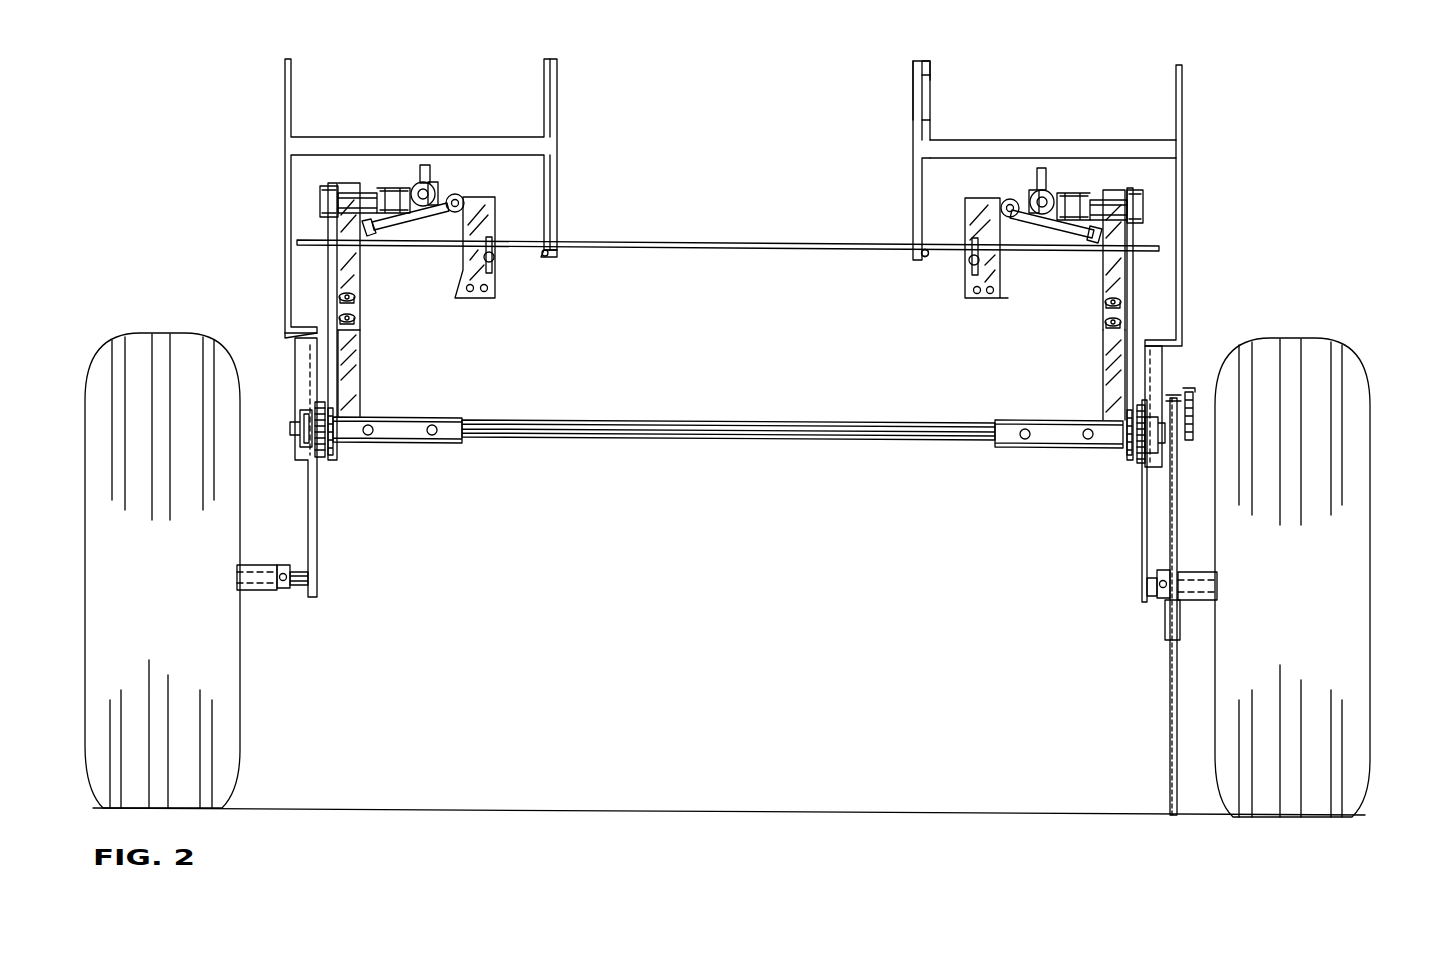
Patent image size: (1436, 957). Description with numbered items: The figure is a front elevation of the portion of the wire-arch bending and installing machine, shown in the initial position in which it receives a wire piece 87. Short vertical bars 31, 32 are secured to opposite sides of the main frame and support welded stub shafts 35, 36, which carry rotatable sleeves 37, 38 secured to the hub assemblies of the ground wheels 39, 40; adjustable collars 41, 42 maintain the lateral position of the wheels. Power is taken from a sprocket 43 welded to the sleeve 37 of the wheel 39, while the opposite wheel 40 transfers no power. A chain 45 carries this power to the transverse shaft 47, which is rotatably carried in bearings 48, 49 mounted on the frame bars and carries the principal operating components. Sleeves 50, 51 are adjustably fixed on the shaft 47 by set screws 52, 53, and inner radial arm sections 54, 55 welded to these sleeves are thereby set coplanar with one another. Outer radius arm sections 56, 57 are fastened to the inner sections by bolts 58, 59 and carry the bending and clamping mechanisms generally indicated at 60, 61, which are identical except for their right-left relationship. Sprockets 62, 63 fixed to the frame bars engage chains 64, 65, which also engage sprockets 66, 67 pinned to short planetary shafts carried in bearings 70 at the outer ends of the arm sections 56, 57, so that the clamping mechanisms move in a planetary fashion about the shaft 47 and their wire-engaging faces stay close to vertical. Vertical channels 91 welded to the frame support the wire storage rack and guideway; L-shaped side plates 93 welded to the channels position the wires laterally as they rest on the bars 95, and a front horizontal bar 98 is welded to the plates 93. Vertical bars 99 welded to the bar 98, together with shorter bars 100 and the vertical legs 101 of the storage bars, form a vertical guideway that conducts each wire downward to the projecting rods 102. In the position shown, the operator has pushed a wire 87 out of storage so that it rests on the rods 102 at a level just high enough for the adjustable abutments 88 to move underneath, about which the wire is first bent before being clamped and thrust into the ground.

The short vertical bar 31 is at (1142, 553).
The short vertical bar 32 is at (314, 535).
The stub shaft 35 is at (1150, 598).
The stub shaft 36 is at (298, 588).
The rotatable sleeve 37 is at (1200, 602).
The rotatable sleeve 38 is at (262, 592).
The wheel 39 is at (1370, 764).
The wheel 40 is at (241, 752).
The adjustable collar 41 is at (1157, 572).
The adjustable collar 42 is at (283, 565).
The sprocket 43 is at (1170, 640).
The chain 45 is at (1168, 510).
The transverse shaft 47 is at (781, 441).
The bearing 48 is at (1150, 455).
The bearing 49 is at (302, 413).
The sleeve 50 is at (1029, 420).
The sleeve 51 is at (416, 417).
The set screw 52 is at (1022, 430).
The set screw 53 is at (436, 428).
The inner radial arm section 54 is at (1103, 360).
The inner radial arm section 55 is at (352, 368).
The outer radius arm section 56 is at (1103, 267).
The outer radius arm section 57 is at (359, 270).
The bolts 58 is at (1104, 323).
The bolts 59 is at (357, 320).
The bending and clamping mechanism 60 is at (1003, 204).
The bending and clamping mechanism 61 is at (461, 190).
The sprocket 62 is at (1125, 435).
The sprocket 63 is at (335, 405).
The chain 64 is at (1134, 282).
The chain 65 is at (329, 268).
The sprocket 66 is at (1134, 188).
The sprocket 67 is at (334, 184).
The bearings 70 is at (358, 193).
The wire work piece 87 is at (692, 241).
The adjustable abutment 88 is at (974, 263).
The vertical channel 91 is at (1160, 363).
The L-shaped side plate 93 is at (1182, 92).
The bars 95 is at (930, 68).
The front horizontal bar 98 is at (1085, 146).
The vertical bar 99 is at (913, 71).
The shorter bar 100 is at (913, 220).
The vertical leg 101 is at (932, 102).
The projecting rod 102 is at (926, 258).